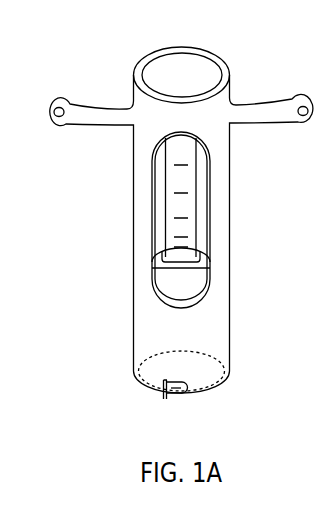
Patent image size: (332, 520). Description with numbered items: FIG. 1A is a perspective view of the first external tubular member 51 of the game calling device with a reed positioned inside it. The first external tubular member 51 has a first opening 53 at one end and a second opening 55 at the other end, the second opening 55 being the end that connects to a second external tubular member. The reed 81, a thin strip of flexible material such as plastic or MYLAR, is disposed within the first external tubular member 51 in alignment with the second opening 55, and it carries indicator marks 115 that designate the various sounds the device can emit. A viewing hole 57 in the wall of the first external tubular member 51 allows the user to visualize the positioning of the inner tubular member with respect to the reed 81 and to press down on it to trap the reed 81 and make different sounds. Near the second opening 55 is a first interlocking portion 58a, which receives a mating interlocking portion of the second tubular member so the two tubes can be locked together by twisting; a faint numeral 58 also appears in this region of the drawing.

The first external tubular member 51 is at (230, 91).
The first opening 53 is at (187, 66).
The second opening 55 is at (156, 392).
The viewing hole 57 is at (157, 203).
The base 58 is at (188, 340).
The first interlocking portion 58a is at (168, 398).
The reed 81 is at (188, 183).
The indicator marks 115 is at (182, 218).